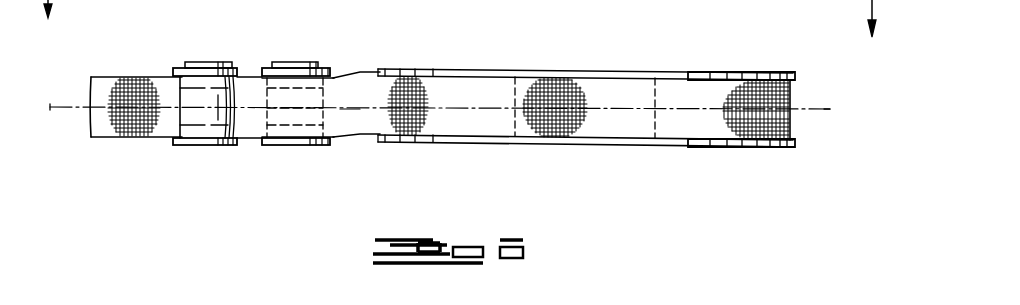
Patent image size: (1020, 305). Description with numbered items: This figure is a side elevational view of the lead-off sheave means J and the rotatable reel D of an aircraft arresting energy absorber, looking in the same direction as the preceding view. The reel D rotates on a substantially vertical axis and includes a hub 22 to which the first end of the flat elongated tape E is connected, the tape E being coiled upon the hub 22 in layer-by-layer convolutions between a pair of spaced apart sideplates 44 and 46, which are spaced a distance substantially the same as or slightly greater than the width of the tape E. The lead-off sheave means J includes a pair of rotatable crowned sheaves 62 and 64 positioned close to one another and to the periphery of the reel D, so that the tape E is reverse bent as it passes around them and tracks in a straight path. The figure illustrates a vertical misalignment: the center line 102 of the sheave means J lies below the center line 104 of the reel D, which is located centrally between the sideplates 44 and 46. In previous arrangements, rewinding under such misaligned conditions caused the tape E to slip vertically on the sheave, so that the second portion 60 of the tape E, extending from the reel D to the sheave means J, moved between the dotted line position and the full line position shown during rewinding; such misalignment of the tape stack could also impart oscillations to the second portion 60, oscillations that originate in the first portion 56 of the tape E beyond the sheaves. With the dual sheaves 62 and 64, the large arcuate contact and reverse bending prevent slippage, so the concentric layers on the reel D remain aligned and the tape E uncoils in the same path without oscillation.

The hub 22 is at (513, 122).
The sideplate 44 is at (737, 72).
The sideplate 46 is at (753, 146).
The first portion of tape 56 is at (153, 132).
The second portion of tape 60 is at (357, 123).
The rotatable sheave 62 is at (325, 78).
The rotatable sheave 64 is at (230, 70).
The center line of sheave means 102 is at (53, 110).
The center line of reel 104 is at (830, 112).
The flat elongated tape E is at (128, 75).
The lead-off sheave means J is at (275, 52).
The rotatable reel D is at (577, 71).